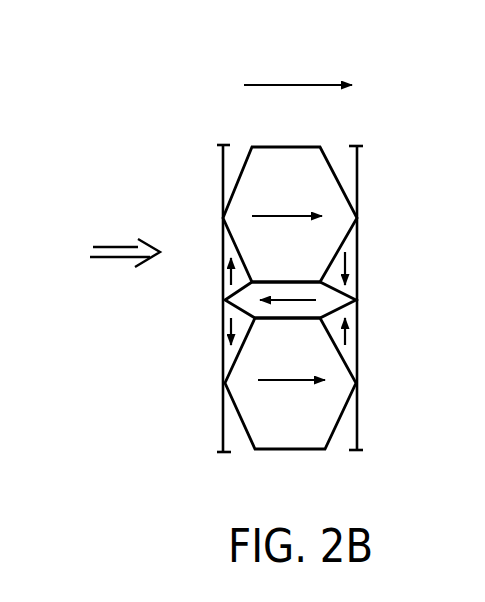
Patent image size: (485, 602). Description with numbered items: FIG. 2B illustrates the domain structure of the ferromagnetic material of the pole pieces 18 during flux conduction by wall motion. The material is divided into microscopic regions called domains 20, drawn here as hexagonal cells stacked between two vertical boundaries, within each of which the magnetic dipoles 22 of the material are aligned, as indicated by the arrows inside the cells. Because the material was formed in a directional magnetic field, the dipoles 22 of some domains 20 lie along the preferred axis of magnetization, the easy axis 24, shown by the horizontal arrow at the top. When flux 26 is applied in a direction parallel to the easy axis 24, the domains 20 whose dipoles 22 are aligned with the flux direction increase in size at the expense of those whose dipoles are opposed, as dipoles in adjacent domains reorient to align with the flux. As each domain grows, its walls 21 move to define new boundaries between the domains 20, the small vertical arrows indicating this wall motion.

The pole pieces 18 is at (363, 123).
The domains 20 is at (275, 462).
The walls 21 is at (296, 148).
The magnetic dipoles 22 is at (292, 394).
The easy axis 24 is at (288, 86).
The flux 26 is at (116, 261).